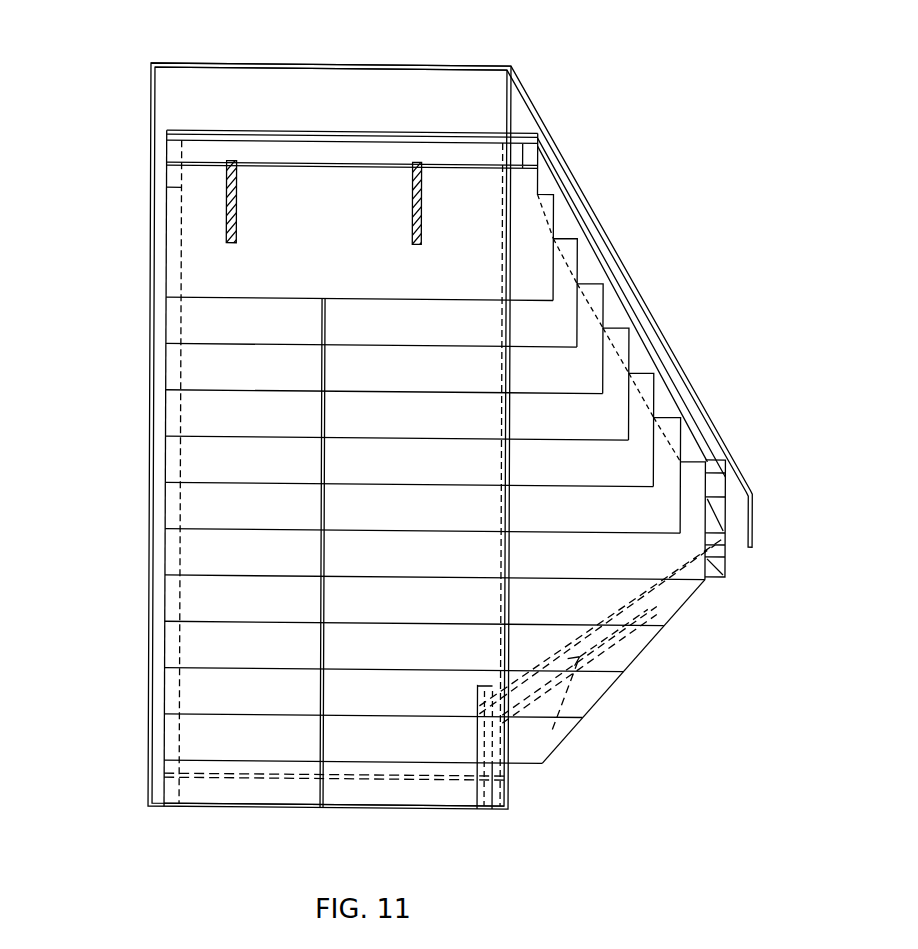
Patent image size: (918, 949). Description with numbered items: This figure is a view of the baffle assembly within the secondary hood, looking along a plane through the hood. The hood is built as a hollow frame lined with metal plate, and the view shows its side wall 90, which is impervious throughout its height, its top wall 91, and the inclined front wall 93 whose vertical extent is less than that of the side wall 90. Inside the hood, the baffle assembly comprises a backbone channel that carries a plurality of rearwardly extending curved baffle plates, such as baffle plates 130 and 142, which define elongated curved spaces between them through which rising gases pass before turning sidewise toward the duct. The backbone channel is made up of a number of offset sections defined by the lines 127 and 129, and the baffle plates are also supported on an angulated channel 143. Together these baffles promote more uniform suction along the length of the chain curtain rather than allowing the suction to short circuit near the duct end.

The side wall 90 is at (150, 378).
The top wall 91 is at (391, 64).
The inclined front wall 93 is at (653, 308).
The curved baffle plate 142 is at (197, 272).
The angulated channel 143 is at (177, 593).
The curved baffle plate 130 is at (172, 745).
The offset line 127 is at (505, 718).
The offset line 129 is at (737, 480).